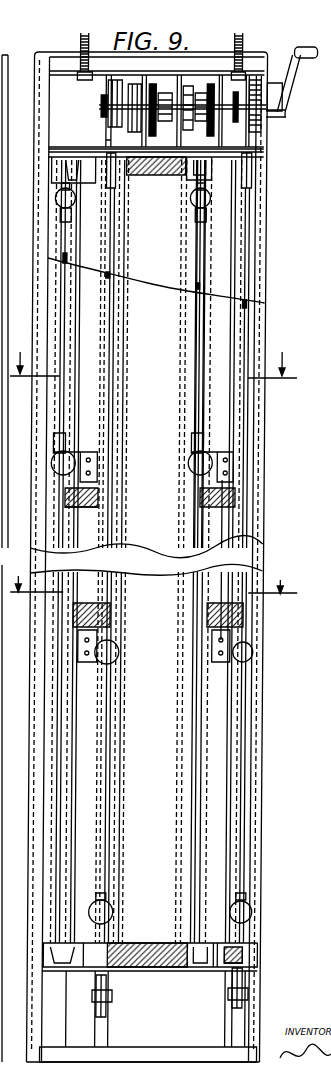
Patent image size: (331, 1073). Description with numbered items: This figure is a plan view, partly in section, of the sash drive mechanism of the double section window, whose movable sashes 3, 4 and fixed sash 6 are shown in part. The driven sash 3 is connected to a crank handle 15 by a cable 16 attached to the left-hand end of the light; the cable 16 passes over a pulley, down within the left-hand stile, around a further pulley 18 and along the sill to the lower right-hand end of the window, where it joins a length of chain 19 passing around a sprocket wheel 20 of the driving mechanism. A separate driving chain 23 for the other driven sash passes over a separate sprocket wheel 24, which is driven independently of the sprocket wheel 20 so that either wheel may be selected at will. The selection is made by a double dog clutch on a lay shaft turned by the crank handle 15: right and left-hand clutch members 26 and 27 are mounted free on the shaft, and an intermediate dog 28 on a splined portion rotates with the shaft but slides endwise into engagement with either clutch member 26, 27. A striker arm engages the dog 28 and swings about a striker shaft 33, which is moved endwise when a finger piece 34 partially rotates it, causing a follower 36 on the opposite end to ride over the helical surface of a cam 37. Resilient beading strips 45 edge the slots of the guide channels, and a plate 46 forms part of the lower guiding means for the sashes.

The movable sash 3 is at (246, 736).
The movable sash 4 is at (210, 326).
The fixed sash 6 is at (245, 578).
The crank handle 15 is at (288, 113).
The cable 16 is at (0, 225).
The pulley 18 is at (253, 988).
The chain 19 is at (261, 158).
The sprocket wheel 20 is at (241, 98).
The driving chain 23 is at (108, 149).
The sprocket wheel 24 is at (121, 99).
The right-hand clutch member 26 is at (163, 116).
The left-hand clutch member 27 is at (201, 116).
The intermediate dog 28 is at (188, 96).
The striker shaft 33 is at (243, 114).
The finger piece 34 is at (284, 98).
The follower 36 is at (131, 98).
The cam 37 is at (132, 116).
The resilient beading strips 45 is at (153, 355).
The plate 46 is at (157, 576).